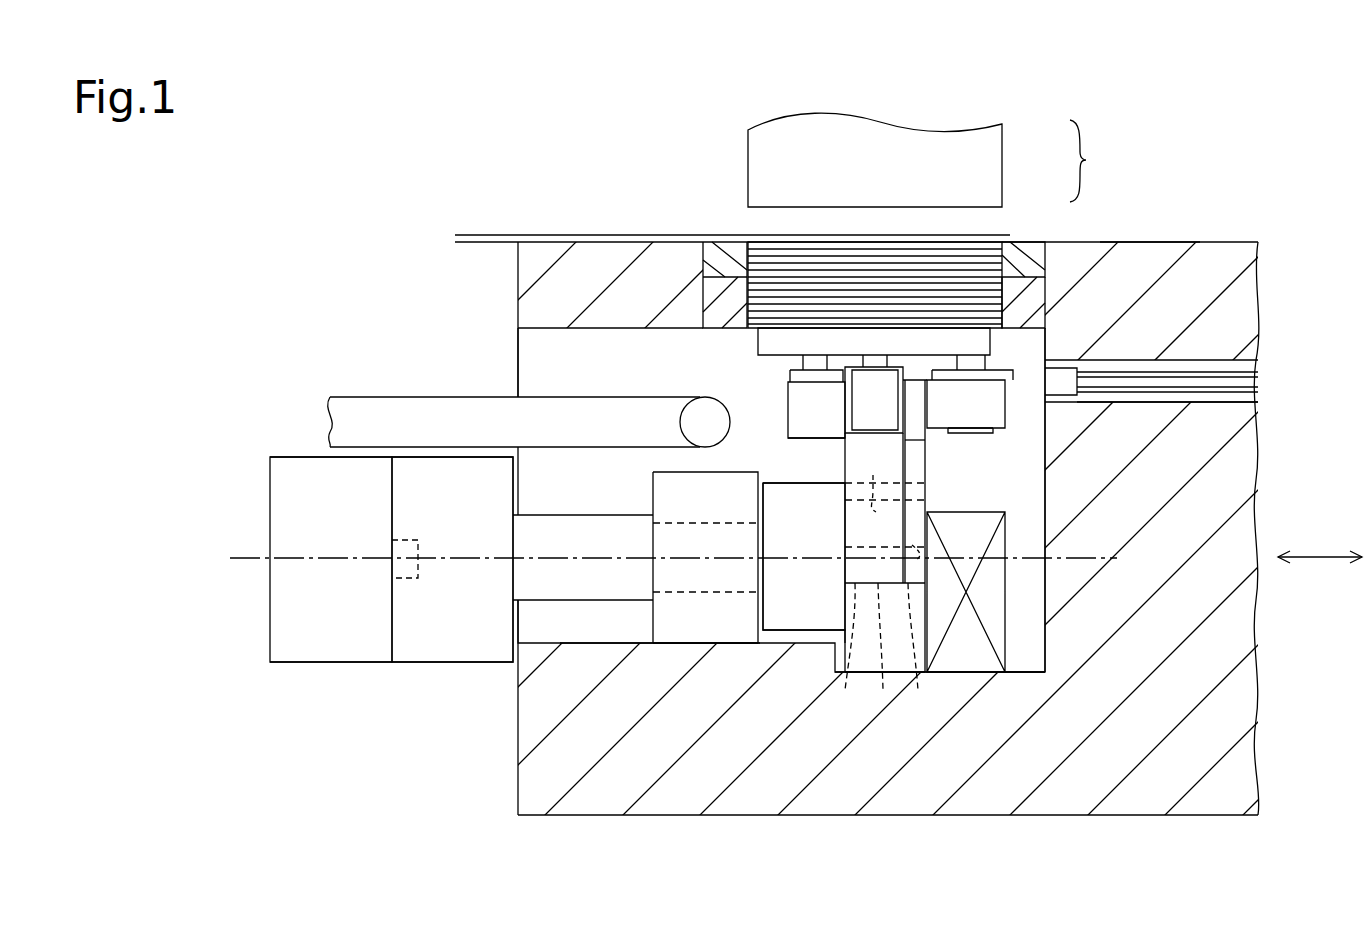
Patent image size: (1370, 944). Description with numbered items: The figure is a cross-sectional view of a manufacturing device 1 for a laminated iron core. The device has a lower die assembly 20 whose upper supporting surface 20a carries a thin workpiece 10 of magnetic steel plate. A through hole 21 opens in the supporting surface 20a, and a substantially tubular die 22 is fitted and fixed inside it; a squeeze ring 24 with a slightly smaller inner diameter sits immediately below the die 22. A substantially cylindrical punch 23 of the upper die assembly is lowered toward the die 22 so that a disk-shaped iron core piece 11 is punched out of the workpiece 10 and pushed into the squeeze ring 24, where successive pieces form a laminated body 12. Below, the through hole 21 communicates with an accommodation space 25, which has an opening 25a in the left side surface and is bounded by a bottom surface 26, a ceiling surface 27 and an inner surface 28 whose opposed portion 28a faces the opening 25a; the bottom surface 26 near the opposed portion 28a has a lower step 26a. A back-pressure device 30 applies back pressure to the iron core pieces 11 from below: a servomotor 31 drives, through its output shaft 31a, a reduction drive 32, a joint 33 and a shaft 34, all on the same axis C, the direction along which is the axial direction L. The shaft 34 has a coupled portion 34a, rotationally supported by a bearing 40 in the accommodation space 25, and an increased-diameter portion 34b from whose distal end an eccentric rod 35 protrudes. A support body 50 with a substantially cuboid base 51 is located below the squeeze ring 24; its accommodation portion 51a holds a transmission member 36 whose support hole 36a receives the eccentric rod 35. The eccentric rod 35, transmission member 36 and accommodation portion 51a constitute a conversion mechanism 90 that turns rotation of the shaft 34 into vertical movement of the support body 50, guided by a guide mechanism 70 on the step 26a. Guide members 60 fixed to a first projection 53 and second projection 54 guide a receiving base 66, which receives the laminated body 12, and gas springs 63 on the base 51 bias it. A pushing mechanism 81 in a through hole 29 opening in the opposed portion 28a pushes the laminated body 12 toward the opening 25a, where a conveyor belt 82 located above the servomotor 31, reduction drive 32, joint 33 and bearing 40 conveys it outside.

The manufacturing device 1 is at (1283, 148).
The workpiece 10 is at (500, 234).
The iron core piece 11 is at (1012, 242).
The laminated body 12 is at (1096, 161).
The lower die assembly 20 is at (1218, 240).
The supporting surface 20a is at (1162, 241).
The through hole 21 is at (715, 246).
The die 22 is at (1047, 260).
The punch 23 is at (748, 160).
The squeeze ring 24 is at (1047, 292).
The accommodation space 25 is at (538, 366).
The opening 25a is at (548, 644).
The bottom surface 26 is at (618, 641).
The step 26a is at (1028, 673).
The ceiling surface 27 is at (624, 330).
The inner surface 28 is at (1043, 578).
The opposed portion 28a is at (1044, 641).
The through hole 29 is at (1158, 403).
The back-pressure device 30 is at (290, 450).
The servomotor 31 is at (292, 663).
The output shaft 31a is at (405, 580).
The reduction drive 32 is at (415, 663).
The joint 33 is at (567, 514).
The shaft 34 is at (697, 702).
The coupled portion 34a is at (722, 593).
The increased-diameter portion 34b is at (782, 640).
The eccentric rod 35 is at (838, 652).
The transmission member 36 is at (880, 652).
The support hole 36a is at (885, 552).
The bearing 40 is at (652, 490).
The support body 50 is at (930, 446).
The base 51 is at (927, 468).
The accommodation portion 51a is at (918, 675).
The first projection 53 is at (1006, 430).
The second projection 54 is at (787, 432).
The guide member 60 is at (784, 395).
The gas spring 63 is at (843, 410).
The receiving base 66 is at (758, 345).
The guide mechanism 70 is at (978, 674).
The pushing mechanism 81 is at (1164, 372).
The conveyor belt 82 is at (356, 396).
The conversion mechanism 90 is at (960, 718).
The axis C is at (660, 558).
The axial direction L is at (1320, 543).